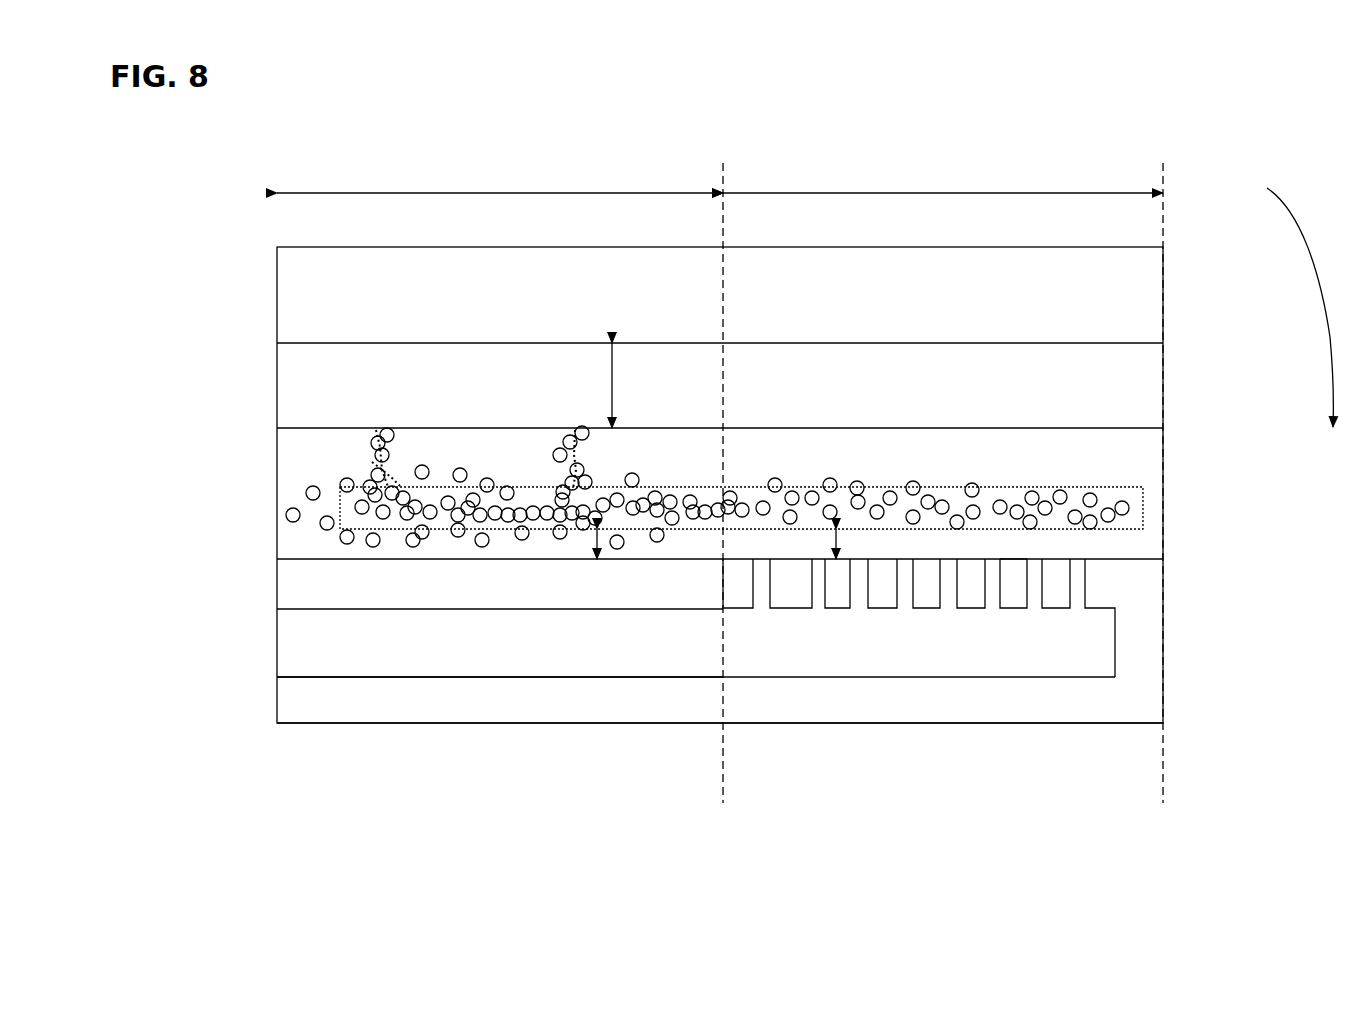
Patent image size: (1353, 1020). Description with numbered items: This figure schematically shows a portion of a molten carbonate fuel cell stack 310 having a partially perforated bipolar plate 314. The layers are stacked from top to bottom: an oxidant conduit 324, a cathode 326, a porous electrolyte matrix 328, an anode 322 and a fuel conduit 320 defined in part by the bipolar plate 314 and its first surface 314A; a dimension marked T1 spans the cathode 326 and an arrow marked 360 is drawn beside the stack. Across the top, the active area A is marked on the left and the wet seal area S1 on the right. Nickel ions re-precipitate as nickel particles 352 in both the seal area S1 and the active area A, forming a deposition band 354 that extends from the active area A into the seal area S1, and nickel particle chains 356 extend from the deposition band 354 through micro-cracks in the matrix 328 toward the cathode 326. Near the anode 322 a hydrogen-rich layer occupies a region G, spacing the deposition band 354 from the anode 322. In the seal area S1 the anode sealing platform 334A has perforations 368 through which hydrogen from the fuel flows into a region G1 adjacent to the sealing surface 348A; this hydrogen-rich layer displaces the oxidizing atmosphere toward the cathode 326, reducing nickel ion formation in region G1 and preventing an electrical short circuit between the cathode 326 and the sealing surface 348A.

The MCFC stack 310 is at (1060, 122).
The light direction 360 is at (1284, 295).
The oxidant conduit 324 is at (1182, 278).
The cathode 326 is at (1022, 362).
The porous electrolyte matrix 328 is at (1095, 457).
The deposition band 354 is at (340, 510).
The nickel particle chains 356 is at (553, 462).
The nickel particles 352 is at (378, 474).
The anode 322 is at (300, 588).
The anode sealing platform 334A is at (933, 547).
The sealing surface 348A is at (1013, 559).
The perforations 368 is at (855, 612).
The fuel conduit 320 is at (1178, 643).
The first surface 314A is at (302, 677).
The bipolar plate 314 is at (315, 715).
The active area A is at (388, 193).
The wet seal area S1 is at (841, 193).
The thickness T1 is at (612, 388).
The region G is at (597, 542).
The region G1 is at (836, 541).